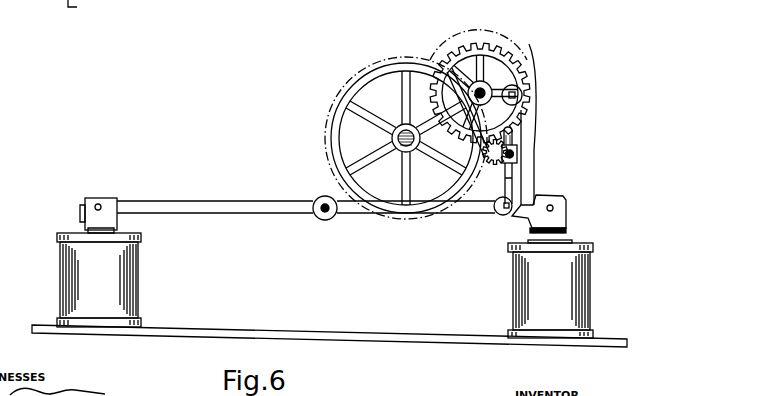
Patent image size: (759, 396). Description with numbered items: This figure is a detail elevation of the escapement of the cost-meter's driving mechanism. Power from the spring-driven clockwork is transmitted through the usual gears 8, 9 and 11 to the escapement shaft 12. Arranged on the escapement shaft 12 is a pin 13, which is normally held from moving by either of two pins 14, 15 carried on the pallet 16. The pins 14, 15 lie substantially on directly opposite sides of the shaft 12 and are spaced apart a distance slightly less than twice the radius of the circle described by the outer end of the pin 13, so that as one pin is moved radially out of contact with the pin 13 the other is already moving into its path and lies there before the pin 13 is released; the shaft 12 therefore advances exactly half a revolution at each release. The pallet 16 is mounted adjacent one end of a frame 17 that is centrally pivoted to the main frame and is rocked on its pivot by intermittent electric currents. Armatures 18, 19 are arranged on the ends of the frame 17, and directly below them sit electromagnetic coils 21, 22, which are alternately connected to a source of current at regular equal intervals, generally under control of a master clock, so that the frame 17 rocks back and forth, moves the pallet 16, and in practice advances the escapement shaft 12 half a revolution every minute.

The gear 8 is at (360, 90).
The gear 9 is at (512, 44).
The gear 11 is at (513, 140).
The escapement shaft 12 is at (517, 152).
The pin 13 is at (513, 186).
The pin 14 is at (514, 94).
The pin 15 is at (503, 208).
The pallet 16 is at (528, 167).
The frame 17 is at (289, 208).
The armature 18 is at (563, 226).
The armature 19 is at (89, 227).
The electro magnetic coil 21 is at (550, 289).
The electro magnetic coil 22 is at (99, 280).